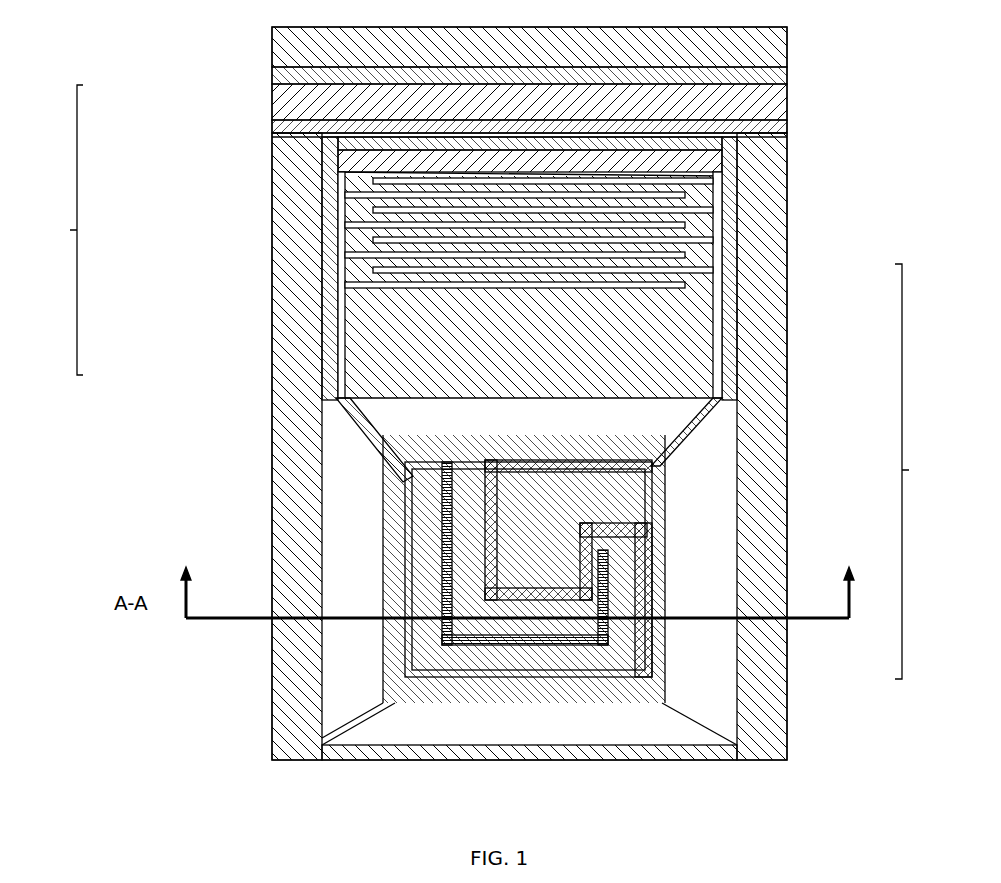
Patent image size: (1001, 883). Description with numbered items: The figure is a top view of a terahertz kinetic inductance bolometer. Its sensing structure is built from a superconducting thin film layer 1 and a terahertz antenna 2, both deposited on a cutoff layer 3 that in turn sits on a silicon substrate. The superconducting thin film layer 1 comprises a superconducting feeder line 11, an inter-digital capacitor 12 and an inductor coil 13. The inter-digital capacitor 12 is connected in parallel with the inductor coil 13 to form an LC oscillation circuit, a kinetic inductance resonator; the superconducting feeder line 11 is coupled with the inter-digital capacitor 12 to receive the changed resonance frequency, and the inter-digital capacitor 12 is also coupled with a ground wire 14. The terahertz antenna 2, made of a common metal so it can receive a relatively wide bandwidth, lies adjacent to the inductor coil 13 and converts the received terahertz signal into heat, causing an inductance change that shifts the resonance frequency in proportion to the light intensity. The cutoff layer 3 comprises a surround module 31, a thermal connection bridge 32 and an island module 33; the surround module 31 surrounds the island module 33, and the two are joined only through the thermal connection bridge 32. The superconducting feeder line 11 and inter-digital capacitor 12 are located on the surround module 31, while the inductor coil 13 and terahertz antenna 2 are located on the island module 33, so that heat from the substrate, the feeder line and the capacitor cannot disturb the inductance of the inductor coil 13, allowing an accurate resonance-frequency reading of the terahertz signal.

The superconducting thin film layer 1 is at (53, 230).
The superconducting feeder line 11 is at (304, 99).
The inter-digital capacitor 12 is at (373, 257).
The inductor coil 13 is at (405, 479).
The ground wire 14 is at (300, 47).
The terahertz antenna 2 is at (447, 564).
The cutoff layer 3 is at (915, 471).
The surround module 31 is at (638, 328).
The thermal connection bridge 32 is at (677, 707).
The island module 33 is at (657, 565).